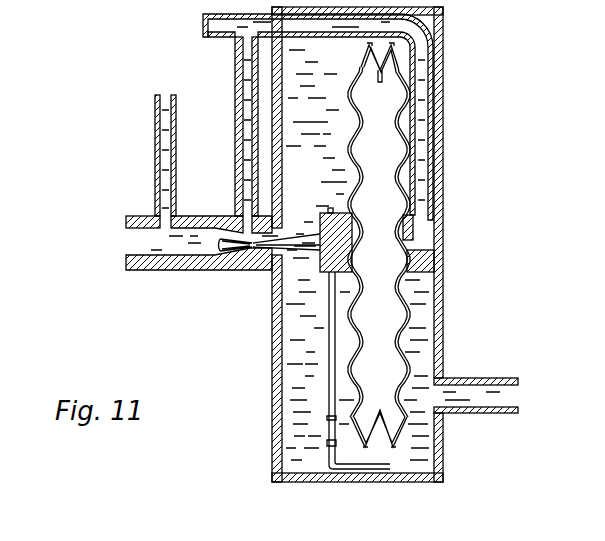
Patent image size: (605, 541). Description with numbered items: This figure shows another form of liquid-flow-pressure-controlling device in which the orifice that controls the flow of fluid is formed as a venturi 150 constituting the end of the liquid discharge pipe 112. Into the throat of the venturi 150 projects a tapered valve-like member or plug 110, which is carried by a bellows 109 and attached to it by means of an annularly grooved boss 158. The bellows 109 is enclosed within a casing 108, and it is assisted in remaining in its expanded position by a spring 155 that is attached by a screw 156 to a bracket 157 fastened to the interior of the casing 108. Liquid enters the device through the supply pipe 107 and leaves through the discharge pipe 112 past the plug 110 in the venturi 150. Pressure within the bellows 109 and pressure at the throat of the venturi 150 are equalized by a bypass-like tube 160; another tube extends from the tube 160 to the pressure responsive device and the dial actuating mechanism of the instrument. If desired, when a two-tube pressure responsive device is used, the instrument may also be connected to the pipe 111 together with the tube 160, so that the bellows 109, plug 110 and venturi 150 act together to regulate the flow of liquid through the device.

The supply pipe 107 is at (473, 377).
The casing 108 is at (442, 457).
The bellows 109 is at (358, 128).
The tapered valve-like member or plug 110 is at (235, 250).
The pipe 111 is at (155, 112).
The liquid discharge pipe 112 is at (135, 217).
The venturi 150 is at (243, 262).
The spring 155 is at (273, 363).
The screw 156 is at (328, 440).
The bracket 157 is at (323, 482).
The annularly grooved boss 158 is at (348, 228).
The bypass-like tube 160 is at (235, 113).